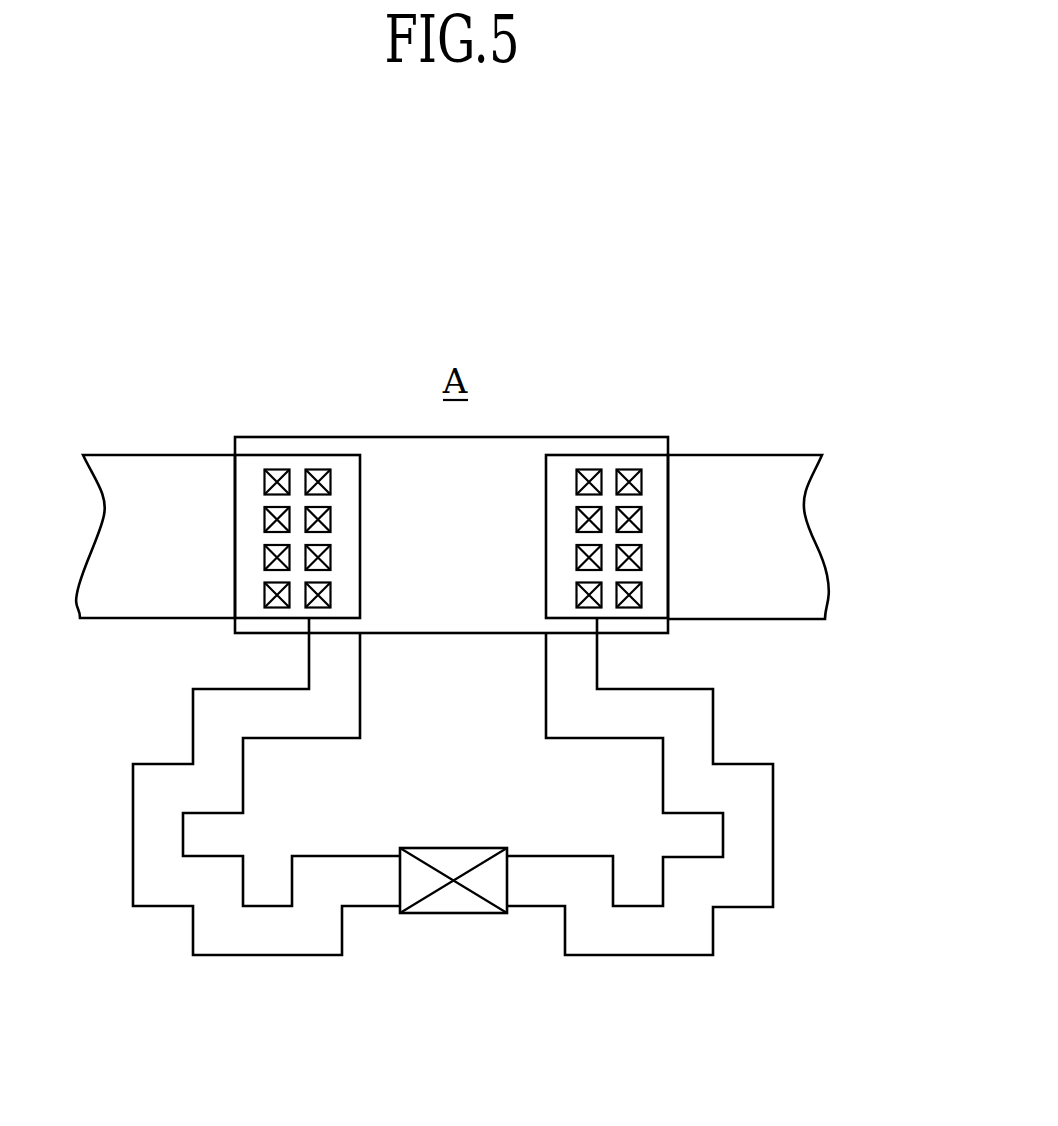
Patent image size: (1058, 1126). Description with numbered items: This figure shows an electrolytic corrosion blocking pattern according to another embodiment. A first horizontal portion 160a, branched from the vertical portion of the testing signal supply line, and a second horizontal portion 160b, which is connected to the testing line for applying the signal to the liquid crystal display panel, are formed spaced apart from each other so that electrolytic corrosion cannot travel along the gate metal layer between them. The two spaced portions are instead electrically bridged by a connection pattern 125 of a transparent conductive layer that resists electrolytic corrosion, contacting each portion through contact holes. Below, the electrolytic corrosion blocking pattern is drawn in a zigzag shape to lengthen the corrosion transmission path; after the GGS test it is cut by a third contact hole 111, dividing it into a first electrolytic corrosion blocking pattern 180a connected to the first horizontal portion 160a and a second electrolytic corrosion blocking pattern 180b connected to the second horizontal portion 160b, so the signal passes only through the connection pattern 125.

The connection pattern 125 is at (557, 437).
The first horizontal portion 160a is at (188, 483).
The second horizontal portion 160b is at (785, 531).
The first electrolytic corrosion blocking pattern 180a is at (270, 942).
The second electrolytic corrosion blocking pattern 180b is at (745, 798).
The third contact hole 111 is at (442, 902).